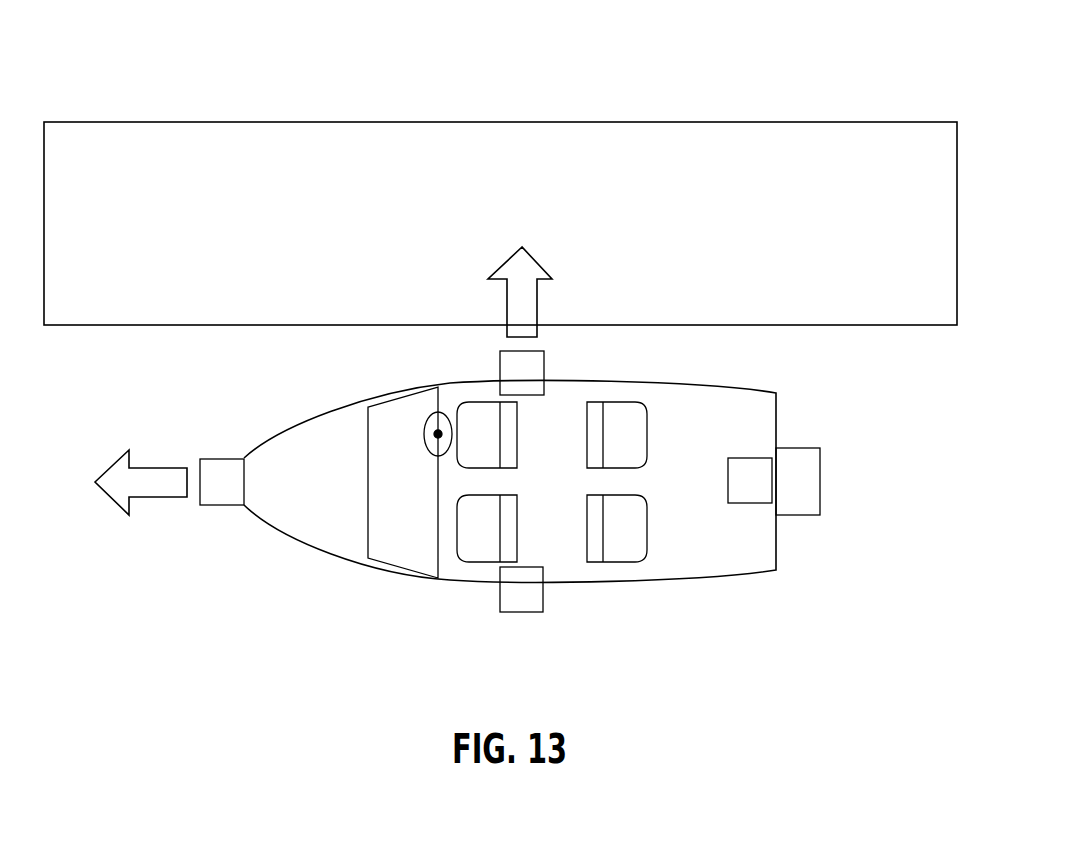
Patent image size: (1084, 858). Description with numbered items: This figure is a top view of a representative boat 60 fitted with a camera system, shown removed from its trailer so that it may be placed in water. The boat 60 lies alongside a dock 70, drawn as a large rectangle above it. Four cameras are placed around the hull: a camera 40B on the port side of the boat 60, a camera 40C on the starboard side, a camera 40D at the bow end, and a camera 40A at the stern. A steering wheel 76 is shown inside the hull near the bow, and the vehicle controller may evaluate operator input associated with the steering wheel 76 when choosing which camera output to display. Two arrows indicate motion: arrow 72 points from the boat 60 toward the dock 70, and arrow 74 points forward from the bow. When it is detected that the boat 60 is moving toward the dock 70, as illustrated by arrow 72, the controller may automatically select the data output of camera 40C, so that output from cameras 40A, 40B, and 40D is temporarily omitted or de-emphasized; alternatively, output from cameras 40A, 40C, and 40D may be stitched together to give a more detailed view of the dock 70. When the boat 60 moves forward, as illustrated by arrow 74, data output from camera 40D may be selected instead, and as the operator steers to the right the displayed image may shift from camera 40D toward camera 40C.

The dock 70 is at (625, 122).
The arrow 72 is at (537, 298).
The arrow 74 is at (158, 467).
The steering wheel 76 is at (437, 412).
The boat 60 is at (790, 412).
The camera 40A is at (752, 503).
The camera 40B is at (543, 598).
The camera 40C is at (544, 366).
The camera 40D is at (218, 505).